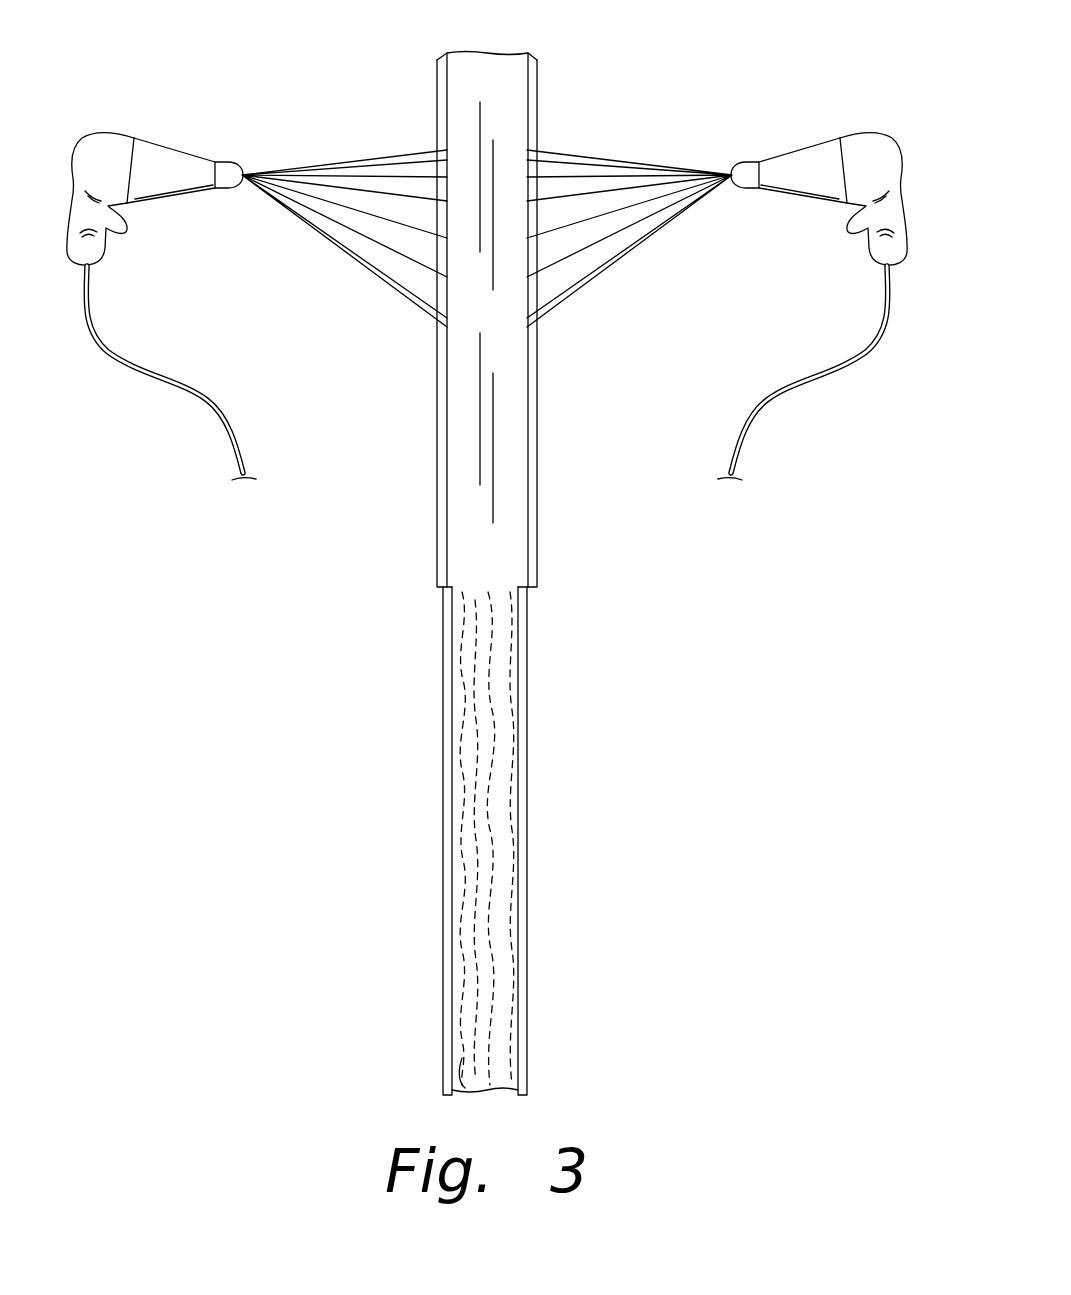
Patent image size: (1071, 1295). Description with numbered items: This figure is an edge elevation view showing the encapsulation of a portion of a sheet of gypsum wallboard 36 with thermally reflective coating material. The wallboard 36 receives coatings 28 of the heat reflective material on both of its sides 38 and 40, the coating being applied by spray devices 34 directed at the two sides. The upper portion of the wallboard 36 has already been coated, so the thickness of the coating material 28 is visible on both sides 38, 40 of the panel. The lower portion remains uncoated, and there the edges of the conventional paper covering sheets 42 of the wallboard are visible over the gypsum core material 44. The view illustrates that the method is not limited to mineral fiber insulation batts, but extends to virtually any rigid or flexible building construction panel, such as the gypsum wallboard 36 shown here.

The coating of thermally reflective material 28 is at (506, 320).
The spray gun 34 is at (176, 148).
The sheet of gypsum wallboard 36 is at (293, 682).
The side of the wallboard 38 is at (437, 531).
The side of the wallboard 40 is at (537, 558).
The paper covering sheets 42 is at (443, 862).
The gypsum core material 44 is at (467, 958).